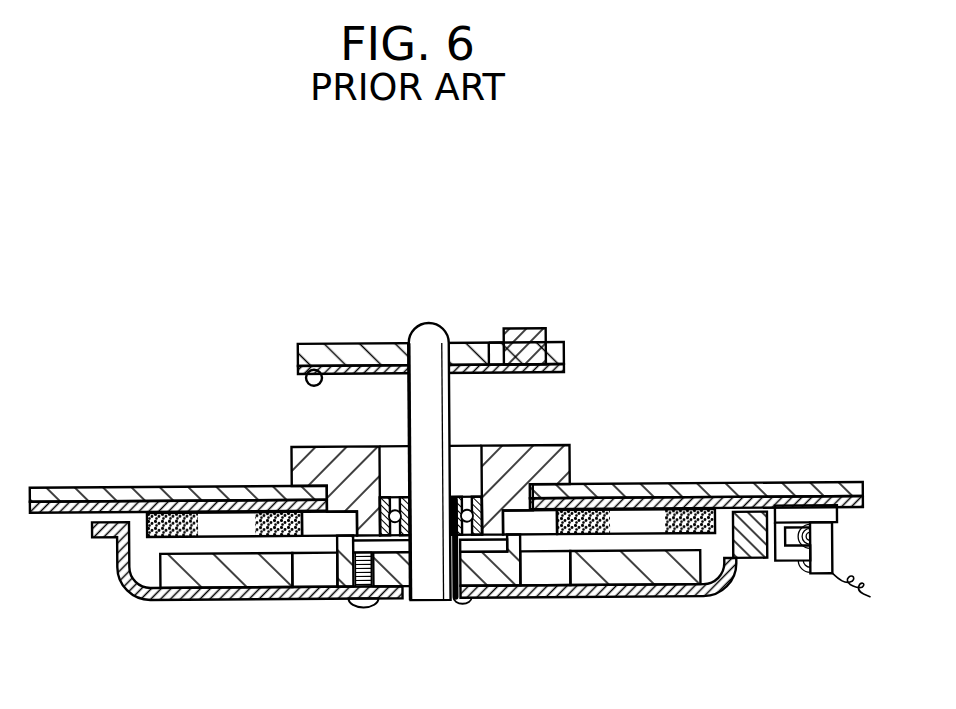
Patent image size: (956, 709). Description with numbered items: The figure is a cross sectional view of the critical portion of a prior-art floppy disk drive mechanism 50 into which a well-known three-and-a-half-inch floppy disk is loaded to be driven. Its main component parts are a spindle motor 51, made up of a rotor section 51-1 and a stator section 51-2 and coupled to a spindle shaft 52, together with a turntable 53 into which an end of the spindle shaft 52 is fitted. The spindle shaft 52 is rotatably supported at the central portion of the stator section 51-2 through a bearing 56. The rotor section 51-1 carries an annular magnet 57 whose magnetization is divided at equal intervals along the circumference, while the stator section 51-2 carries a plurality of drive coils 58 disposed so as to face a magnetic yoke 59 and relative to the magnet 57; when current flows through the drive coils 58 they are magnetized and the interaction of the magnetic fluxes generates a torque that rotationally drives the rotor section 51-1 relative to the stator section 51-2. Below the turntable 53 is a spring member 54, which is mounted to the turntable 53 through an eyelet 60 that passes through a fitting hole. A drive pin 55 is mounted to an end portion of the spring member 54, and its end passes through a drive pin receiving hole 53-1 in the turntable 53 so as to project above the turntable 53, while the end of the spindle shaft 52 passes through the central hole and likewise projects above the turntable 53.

The floppy disk drive mechanism 50 is at (657, 384).
The spindle motor 51 is at (572, 600).
The rotor section 51-1 is at (497, 599).
The stator section 51-2 is at (660, 484).
The spindle shaft 52 is at (440, 405).
The turntable 53 is at (345, 343).
The drive pin receiving hole 53-1 is at (493, 345).
The spring member 54 is at (532, 369).
The drive pin 55 is at (530, 332).
The bearing 56 is at (395, 456).
The annular magnet 57 is at (660, 566).
The drive coil 58 is at (797, 484).
The magnetic yoke 59 is at (165, 512).
The eyelet 60 is at (307, 383).